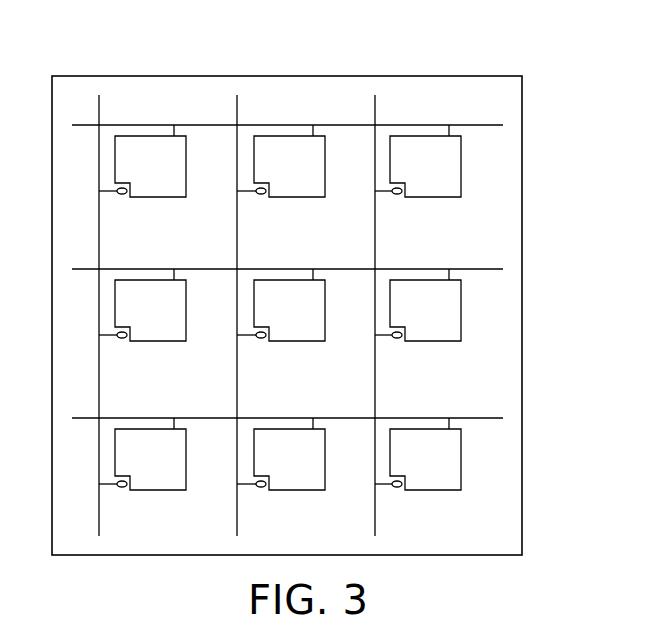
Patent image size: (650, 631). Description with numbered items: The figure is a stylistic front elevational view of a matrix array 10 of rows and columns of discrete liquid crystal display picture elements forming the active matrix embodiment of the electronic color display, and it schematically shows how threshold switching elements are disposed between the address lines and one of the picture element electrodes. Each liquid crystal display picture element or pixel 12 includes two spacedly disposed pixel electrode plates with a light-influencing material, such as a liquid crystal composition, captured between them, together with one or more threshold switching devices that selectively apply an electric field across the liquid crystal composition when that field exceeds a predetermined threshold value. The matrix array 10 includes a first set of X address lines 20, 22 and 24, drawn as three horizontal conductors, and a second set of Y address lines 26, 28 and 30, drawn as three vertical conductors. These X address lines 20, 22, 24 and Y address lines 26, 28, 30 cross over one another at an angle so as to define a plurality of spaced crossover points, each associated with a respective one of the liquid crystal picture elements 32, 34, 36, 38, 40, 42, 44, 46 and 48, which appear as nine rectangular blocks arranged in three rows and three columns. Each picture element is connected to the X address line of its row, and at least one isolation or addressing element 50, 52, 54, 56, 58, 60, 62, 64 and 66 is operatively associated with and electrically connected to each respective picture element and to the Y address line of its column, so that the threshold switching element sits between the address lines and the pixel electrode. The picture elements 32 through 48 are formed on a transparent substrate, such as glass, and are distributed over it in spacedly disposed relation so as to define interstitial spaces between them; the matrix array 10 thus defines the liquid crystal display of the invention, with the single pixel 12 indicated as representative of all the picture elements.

The matrix array 10 is at (578, 52).
The pixel 12 is at (516, 176).
The X address line 20 is at (490, 126).
The X address line 22 is at (495, 269).
The X address line 24 is at (490, 418).
The Y address line 26 is at (100, 103).
The Y address line 28 is at (238, 103).
The Y address line 30 is at (376, 117).
The liquid crystal picture element 32 is at (134, 174).
The liquid crystal picture element 34 is at (273, 174).
The liquid crystal picture element 36 is at (409, 174).
The liquid crystal picture element 38 is at (134, 318).
The liquid crystal picture element 40 is at (273, 318).
The liquid crystal picture element 42 is at (409, 318).
The liquid crystal picture element 44 is at (134, 467).
The liquid crystal picture element 46 is at (273, 467).
The liquid crystal picture element 48 is at (409, 467).
The isolation or addressing element 50 is at (122, 194).
The isolation or addressing element 52 is at (261, 194).
The isolation or addressing element 54 is at (397, 194).
The isolation or addressing element 56 is at (122, 338).
The isolation or addressing element 58 is at (261, 338).
The isolation or addressing element 60 is at (397, 338).
The isolation or addressing element 62 is at (122, 487).
The isolation or addressing element 64 is at (261, 487).
The isolation or addressing element 66 is at (397, 487).